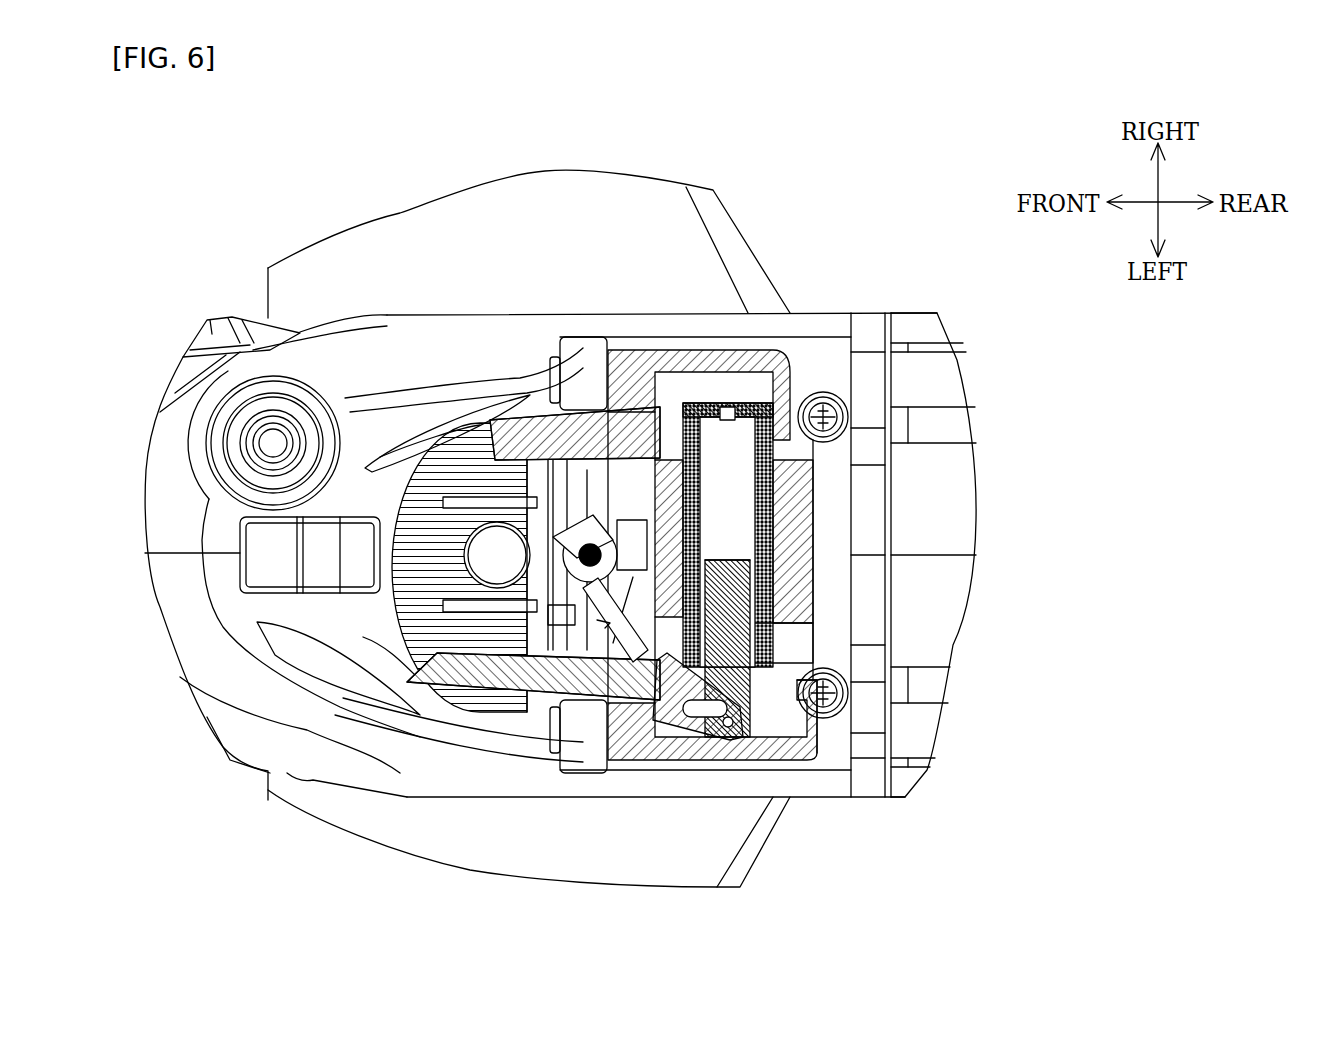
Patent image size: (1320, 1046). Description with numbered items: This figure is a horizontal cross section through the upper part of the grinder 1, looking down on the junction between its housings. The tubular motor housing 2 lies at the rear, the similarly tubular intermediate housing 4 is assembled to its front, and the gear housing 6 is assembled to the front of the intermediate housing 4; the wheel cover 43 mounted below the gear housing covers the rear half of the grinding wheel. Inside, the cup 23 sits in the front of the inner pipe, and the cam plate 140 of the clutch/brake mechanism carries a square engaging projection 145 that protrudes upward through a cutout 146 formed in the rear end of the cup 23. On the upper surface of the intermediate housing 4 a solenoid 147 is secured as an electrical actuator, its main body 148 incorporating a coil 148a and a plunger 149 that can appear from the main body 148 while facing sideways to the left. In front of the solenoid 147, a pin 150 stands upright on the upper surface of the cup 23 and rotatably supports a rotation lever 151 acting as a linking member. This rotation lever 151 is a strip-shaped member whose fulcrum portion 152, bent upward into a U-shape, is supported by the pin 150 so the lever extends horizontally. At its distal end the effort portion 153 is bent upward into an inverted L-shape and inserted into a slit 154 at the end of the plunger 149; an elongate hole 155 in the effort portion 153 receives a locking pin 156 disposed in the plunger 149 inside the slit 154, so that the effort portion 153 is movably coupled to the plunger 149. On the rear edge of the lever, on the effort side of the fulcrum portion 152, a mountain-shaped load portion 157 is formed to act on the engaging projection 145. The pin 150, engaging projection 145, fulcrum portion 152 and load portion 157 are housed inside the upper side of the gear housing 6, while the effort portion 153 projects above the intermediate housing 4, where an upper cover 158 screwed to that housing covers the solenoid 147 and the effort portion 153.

The grinder 1 is at (937, 285).
The motor housing 2 is at (945, 381).
The intermediate housing 4 is at (823, 323).
The gear housing 6 is at (408, 382).
The cup 23 is at (558, 620).
The wheel cover 43 is at (608, 200).
The cam plate 140 is at (533, 676).
The engaging projection 145 is at (617, 340).
The cutout 146 is at (598, 337).
The solenoid 147 is at (773, 530).
The main body 148 is at (773, 493).
The coil 148a is at (710, 405).
The plunger 149 is at (737, 645).
The pin 150 is at (592, 533).
The rotation lever 151 is at (605, 625).
The fulcrum portion 152 is at (572, 513).
The effort portion 153 is at (700, 727).
The slit 154 is at (807, 727).
The elongate hole 155 is at (667, 727).
The locking pin 156 is at (740, 700).
The load portion 157 is at (565, 613).
The upper cover 158 is at (787, 345).